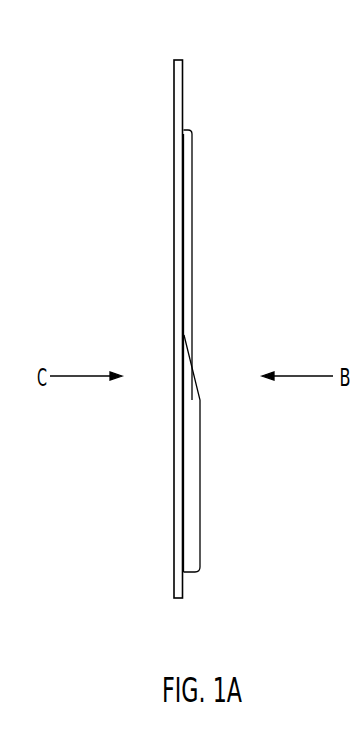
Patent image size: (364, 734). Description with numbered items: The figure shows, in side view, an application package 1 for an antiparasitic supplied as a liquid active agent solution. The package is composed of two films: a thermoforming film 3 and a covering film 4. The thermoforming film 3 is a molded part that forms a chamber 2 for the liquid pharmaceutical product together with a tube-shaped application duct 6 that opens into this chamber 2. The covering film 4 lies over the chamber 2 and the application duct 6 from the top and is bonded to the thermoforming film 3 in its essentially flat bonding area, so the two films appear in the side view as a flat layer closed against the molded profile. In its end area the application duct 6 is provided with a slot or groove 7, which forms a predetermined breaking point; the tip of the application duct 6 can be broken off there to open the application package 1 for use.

The application package 1 is at (240, 67).
The chamber 2 is at (190, 555).
The thermoforming film 3 is at (183, 108).
The covering film 4 is at (173, 123).
The application duct 6 is at (187, 232).
The slot or groove 7 is at (175, 160).